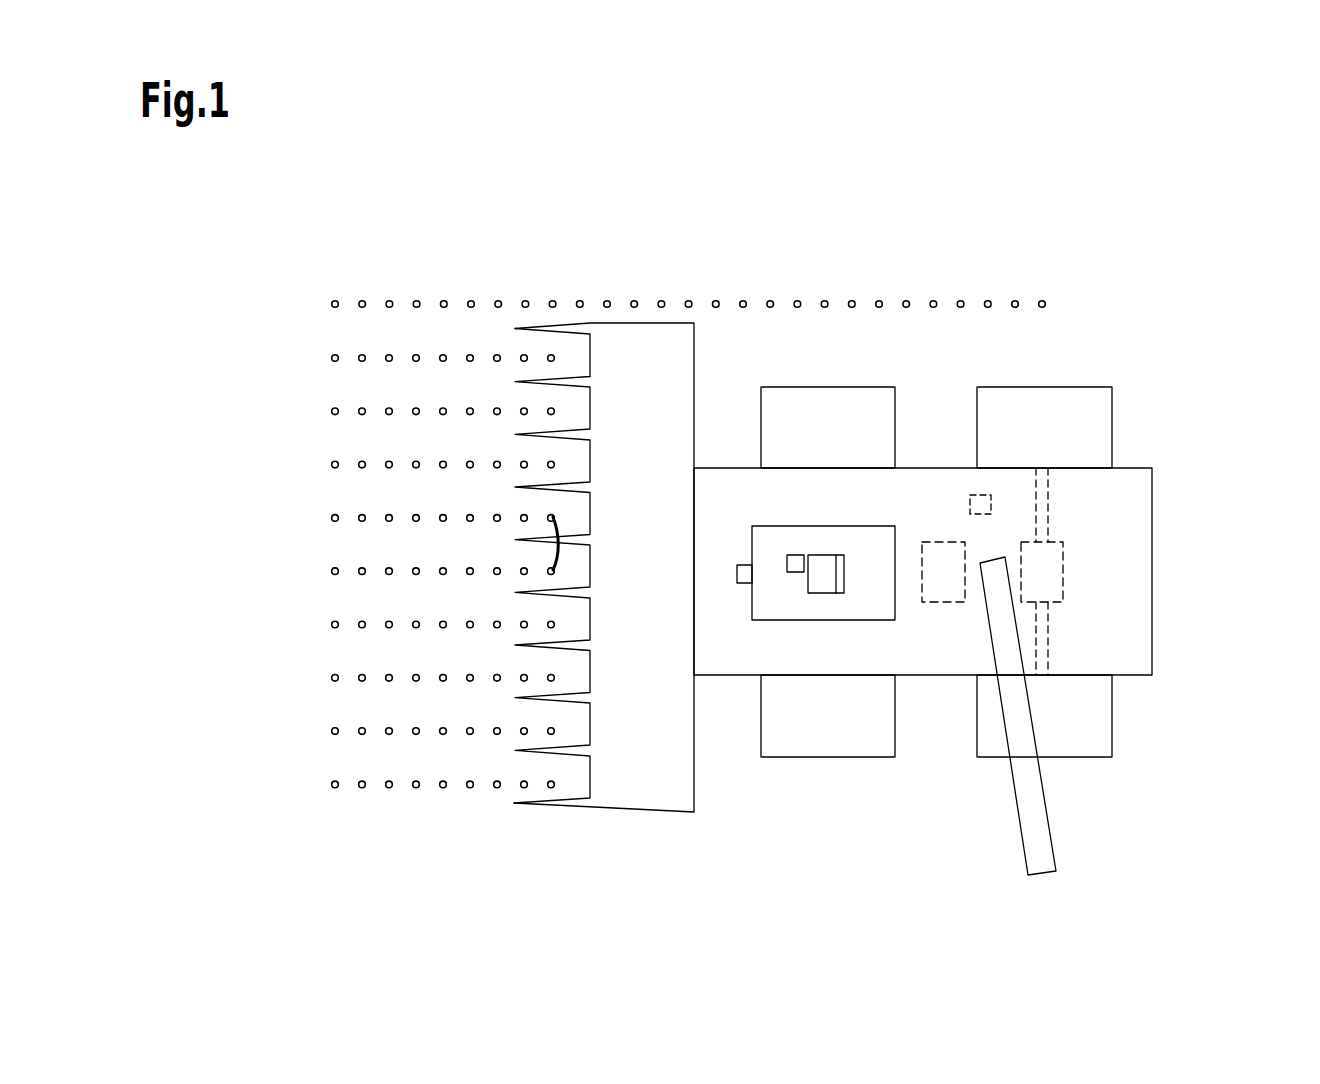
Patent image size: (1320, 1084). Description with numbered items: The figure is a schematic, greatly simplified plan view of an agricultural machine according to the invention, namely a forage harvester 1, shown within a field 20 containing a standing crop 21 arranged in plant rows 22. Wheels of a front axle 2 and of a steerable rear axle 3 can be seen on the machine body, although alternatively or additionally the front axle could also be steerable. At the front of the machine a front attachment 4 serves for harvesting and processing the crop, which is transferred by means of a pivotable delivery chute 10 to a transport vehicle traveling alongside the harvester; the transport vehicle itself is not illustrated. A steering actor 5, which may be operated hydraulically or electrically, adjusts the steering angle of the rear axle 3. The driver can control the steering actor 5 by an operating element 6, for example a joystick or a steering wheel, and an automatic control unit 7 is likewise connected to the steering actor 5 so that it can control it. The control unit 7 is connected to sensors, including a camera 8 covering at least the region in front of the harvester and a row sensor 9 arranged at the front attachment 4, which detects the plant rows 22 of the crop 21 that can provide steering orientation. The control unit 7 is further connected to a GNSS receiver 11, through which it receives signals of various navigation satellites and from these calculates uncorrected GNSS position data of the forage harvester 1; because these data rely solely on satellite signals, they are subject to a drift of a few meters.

The forage harvester 1 is at (770, 563).
The front axle 2 is at (804, 370).
The steerable rear axle 3 is at (1044, 370).
The front attachment 4 is at (652, 813).
The steering actor 5 is at (1051, 588).
The operating element 6 is at (793, 573).
The control unit 7 is at (953, 588).
The camera 8 is at (747, 585).
The row sensor 9 is at (532, 552).
The pivotable delivery chute 10 is at (1012, 775).
The GNSS receiver 11 is at (991, 505).
The field 20 is at (888, 827).
The crop 21 is at (612, 473).
The plant rows 22 is at (314, 678).